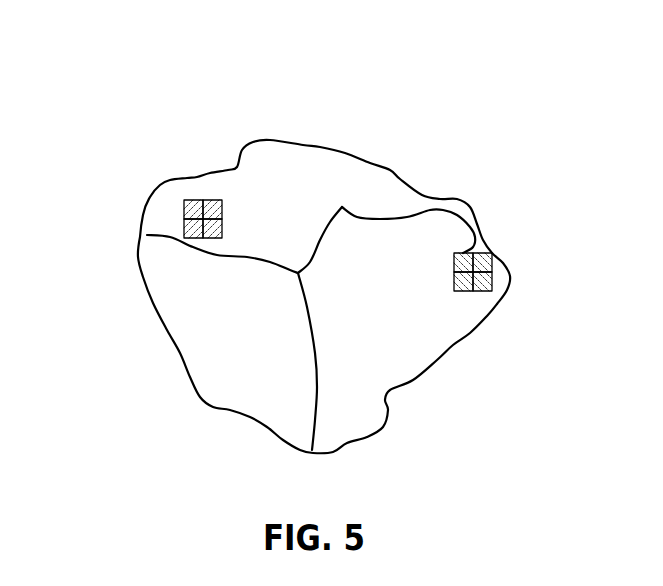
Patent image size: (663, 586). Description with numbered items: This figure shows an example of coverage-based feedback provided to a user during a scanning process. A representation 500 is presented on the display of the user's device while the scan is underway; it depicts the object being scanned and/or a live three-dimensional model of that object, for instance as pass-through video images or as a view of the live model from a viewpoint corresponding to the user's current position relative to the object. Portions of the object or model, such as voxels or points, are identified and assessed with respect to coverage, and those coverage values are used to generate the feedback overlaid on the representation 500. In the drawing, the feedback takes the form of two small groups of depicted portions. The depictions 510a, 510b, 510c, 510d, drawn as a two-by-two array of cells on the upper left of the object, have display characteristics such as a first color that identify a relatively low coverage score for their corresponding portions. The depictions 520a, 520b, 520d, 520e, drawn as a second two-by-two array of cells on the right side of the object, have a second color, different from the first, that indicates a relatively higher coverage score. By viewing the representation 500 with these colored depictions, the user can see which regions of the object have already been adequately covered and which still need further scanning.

The representation 500 is at (58, 78).
The depiction 510a is at (193, 200).
The depiction 510b is at (221, 200).
The depiction 510c is at (184, 218).
The depiction 510d is at (222, 229).
The depiction 520a is at (485, 250).
The depiction 520b is at (493, 252).
The depiction 520d is at (492, 283).
The second sensor array element 520e is at (466, 291).